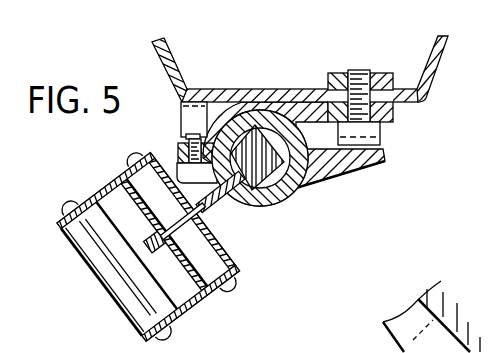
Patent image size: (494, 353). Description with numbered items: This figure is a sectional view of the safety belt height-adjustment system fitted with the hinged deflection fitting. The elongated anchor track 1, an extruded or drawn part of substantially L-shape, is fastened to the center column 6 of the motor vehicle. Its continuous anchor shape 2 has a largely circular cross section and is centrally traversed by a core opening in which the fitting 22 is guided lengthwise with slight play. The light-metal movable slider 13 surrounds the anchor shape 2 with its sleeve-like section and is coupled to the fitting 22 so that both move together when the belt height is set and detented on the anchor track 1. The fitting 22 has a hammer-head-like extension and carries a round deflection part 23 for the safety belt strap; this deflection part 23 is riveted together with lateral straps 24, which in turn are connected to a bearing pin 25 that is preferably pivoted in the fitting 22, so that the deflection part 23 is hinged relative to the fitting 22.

The anchor track 1 is at (302, 98).
The anchor shape 2 is at (239, 120).
The center column 6 is at (448, 50).
The movable slider 13 is at (317, 172).
The fitting 22 is at (220, 211).
The deflection part 23 is at (117, 298).
The lateral straps 24 is at (98, 188).
The bearing pin 25 is at (213, 256).